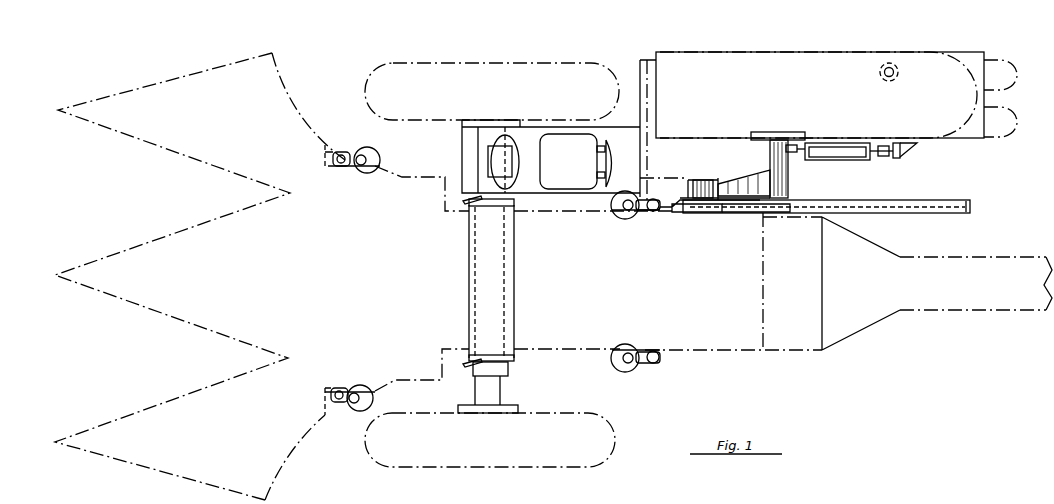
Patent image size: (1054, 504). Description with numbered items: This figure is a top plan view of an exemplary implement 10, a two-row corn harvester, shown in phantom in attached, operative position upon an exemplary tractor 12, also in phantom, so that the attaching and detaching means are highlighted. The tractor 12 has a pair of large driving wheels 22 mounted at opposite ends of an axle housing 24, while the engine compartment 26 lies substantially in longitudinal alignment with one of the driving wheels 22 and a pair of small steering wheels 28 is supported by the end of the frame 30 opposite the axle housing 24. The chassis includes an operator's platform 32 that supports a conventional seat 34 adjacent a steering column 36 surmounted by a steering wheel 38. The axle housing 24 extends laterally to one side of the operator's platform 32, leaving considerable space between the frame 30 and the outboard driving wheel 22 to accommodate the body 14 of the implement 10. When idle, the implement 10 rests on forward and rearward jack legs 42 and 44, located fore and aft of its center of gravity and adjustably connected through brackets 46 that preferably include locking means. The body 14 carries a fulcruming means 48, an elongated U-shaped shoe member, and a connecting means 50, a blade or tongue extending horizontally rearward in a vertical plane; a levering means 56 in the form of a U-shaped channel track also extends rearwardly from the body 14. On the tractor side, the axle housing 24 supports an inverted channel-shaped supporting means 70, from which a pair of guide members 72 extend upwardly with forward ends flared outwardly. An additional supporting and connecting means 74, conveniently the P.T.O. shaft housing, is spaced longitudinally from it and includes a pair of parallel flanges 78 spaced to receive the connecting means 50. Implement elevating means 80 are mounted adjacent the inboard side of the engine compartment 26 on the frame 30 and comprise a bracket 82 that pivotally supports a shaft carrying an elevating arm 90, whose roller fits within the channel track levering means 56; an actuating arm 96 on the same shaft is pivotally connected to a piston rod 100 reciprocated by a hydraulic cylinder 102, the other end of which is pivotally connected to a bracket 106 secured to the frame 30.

The implement 10 is at (300, 452).
The tractor 12 is at (748, 52).
The body 14 is at (575, 330).
The driving wheels 22 is at (573, 77).
The axle housing 24 is at (495, 390).
The engine compartment 26 is at (846, 75).
The steering wheels 28 is at (1017, 120).
The frame 30 is at (962, 150).
The operator's platform 32 is at (626, 147).
The seat 34 is at (577, 178).
The steering column 36 is at (488, 158).
The steering wheel 38 is at (517, 146).
The forward jack legs 42 is at (353, 152).
The rearward jack legs 44 is at (640, 215).
The brackets 46 is at (357, 167).
The fulcruming means 48 is at (516, 270).
The connecting means 50 is at (688, 206).
The levering means 56 is at (880, 207).
The supporting means 70 is at (481, 369).
The guide members 72 is at (490, 203).
The additional supporting and connecting means 74 is at (690, 186).
The flanges 78 is at (700, 183).
The implement elevating means 80 is at (746, 175).
The bracket 82 is at (789, 154).
The elevating arm 90 is at (760, 192).
The actuating arm 96 is at (766, 140).
The piston rod 100 is at (798, 145).
The hydraulic cylinder 102 is at (843, 156).
The bracket 106 is at (906, 150).